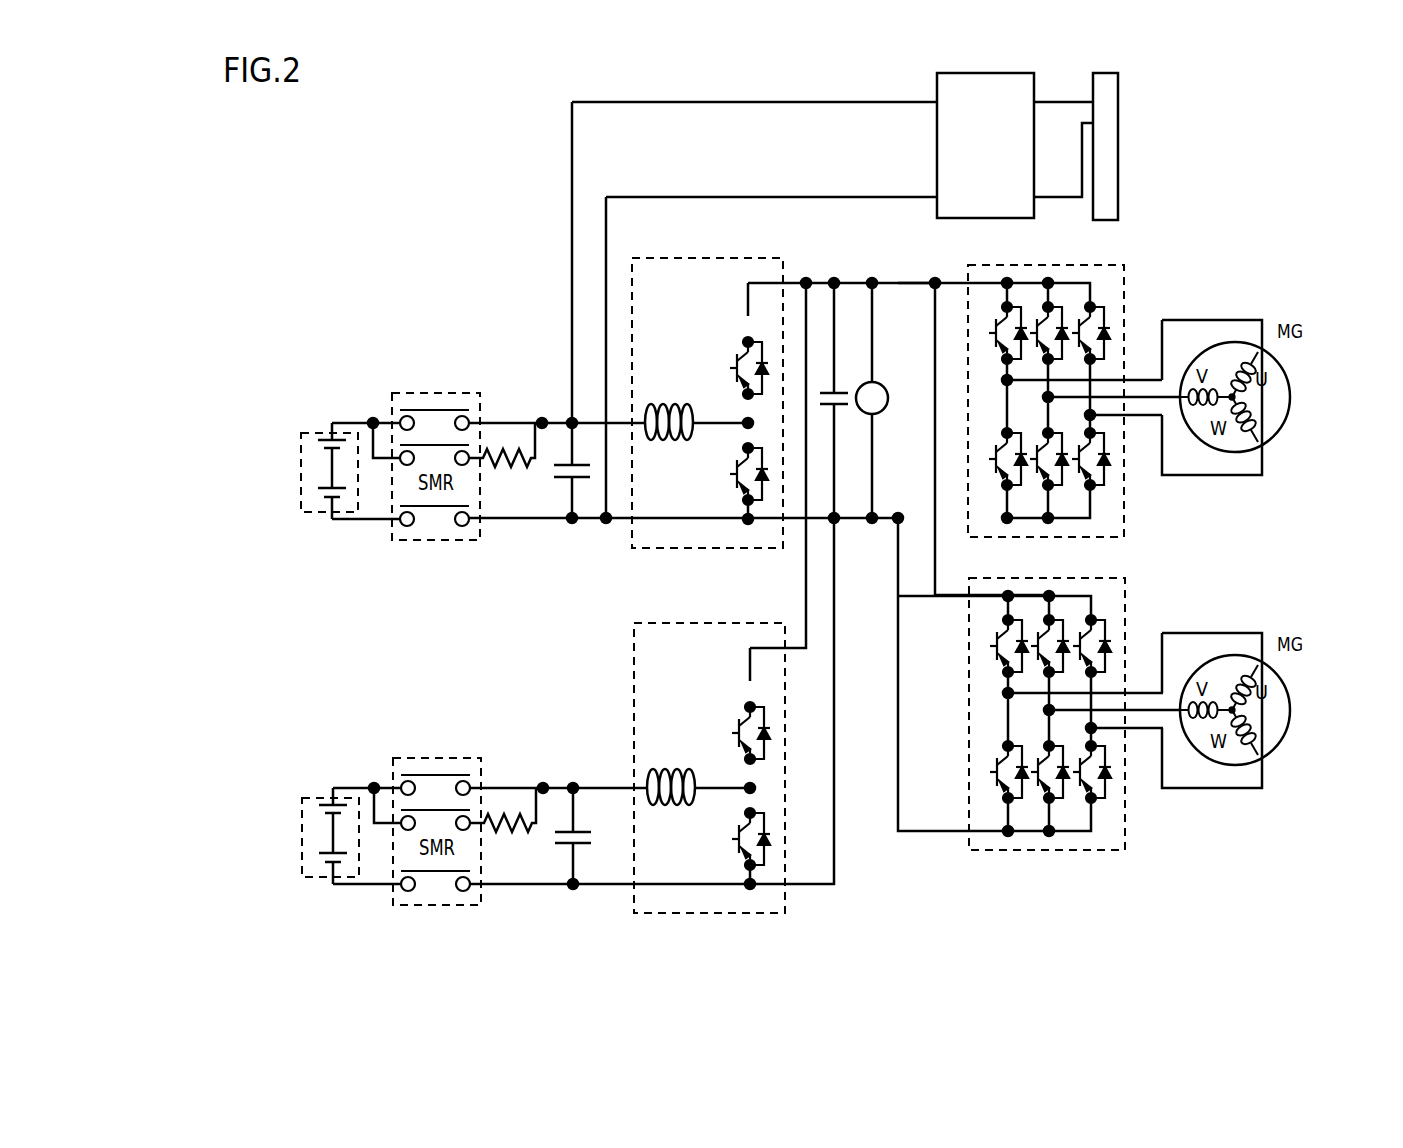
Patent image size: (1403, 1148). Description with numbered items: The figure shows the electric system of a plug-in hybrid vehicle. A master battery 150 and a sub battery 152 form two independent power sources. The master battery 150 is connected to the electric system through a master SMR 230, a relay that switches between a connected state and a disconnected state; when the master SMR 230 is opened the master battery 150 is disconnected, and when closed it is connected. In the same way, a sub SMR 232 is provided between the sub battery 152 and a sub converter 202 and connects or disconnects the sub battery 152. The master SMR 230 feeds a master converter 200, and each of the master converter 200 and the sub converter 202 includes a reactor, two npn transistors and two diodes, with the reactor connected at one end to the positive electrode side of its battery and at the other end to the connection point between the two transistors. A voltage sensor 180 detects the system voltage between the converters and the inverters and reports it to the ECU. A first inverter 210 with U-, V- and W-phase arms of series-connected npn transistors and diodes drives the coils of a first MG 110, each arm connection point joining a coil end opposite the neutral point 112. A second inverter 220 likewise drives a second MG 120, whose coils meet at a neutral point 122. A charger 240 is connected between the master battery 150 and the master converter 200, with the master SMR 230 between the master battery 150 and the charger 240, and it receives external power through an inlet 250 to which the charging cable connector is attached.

The first MG 110 is at (1265, 440).
The neutral point 112 is at (1232, 397).
The second MG 120 is at (1265, 753).
The neutral point 122 is at (1232, 710).
The master battery 150 is at (304, 433).
The sub battery 152 is at (304, 798).
The voltage sensor 180 is at (885, 412).
The master converter 200 is at (765, 255).
The sub converter 202 is at (687, 620).
The first inverter 210 is at (1124, 498).
The second inverter 220 is at (1125, 810).
The master SMR 230 is at (433, 393).
The sub SMR 232 is at (434, 758).
The charger 240 is at (937, 140).
The inlet 250 is at (1118, 148).